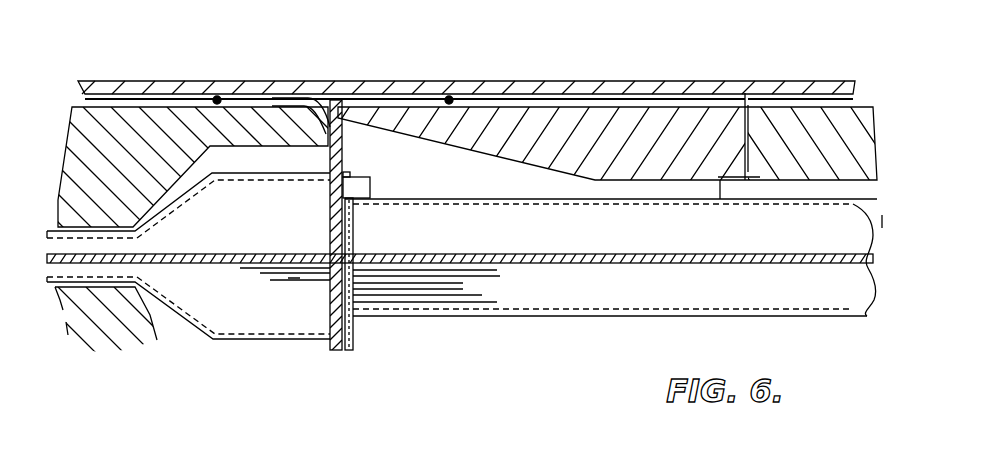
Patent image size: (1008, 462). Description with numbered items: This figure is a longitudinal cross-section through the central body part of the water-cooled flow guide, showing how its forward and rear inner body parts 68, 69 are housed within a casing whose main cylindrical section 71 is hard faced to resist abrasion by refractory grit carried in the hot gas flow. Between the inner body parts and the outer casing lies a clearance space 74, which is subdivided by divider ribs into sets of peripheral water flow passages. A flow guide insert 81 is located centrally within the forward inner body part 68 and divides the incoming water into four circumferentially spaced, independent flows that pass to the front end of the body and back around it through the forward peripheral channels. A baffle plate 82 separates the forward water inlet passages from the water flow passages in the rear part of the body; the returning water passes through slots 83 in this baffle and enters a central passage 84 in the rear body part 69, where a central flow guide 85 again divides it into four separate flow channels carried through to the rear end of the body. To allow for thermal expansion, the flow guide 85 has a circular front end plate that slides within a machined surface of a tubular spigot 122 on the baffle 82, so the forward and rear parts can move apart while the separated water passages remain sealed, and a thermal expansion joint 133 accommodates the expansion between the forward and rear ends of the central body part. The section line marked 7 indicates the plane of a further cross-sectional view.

The forward inner body part 68 is at (136, 130).
The main cylindrical section 71 is at (185, 88).
The clearance space 74 is at (220, 98).
The slots 83 is at (368, 132).
The rear inner body part 69 is at (436, 118).
The central passage 84 is at (485, 168).
The thermal expansion joint 133 is at (746, 130).
The tubular spigot 122 is at (372, 178).
The baffle plate 82 is at (353, 334).
The central flow guide 85 is at (513, 270).
The flow guide insert 81 is at (220, 286).
The section line 7- 7 is at (254, 262).